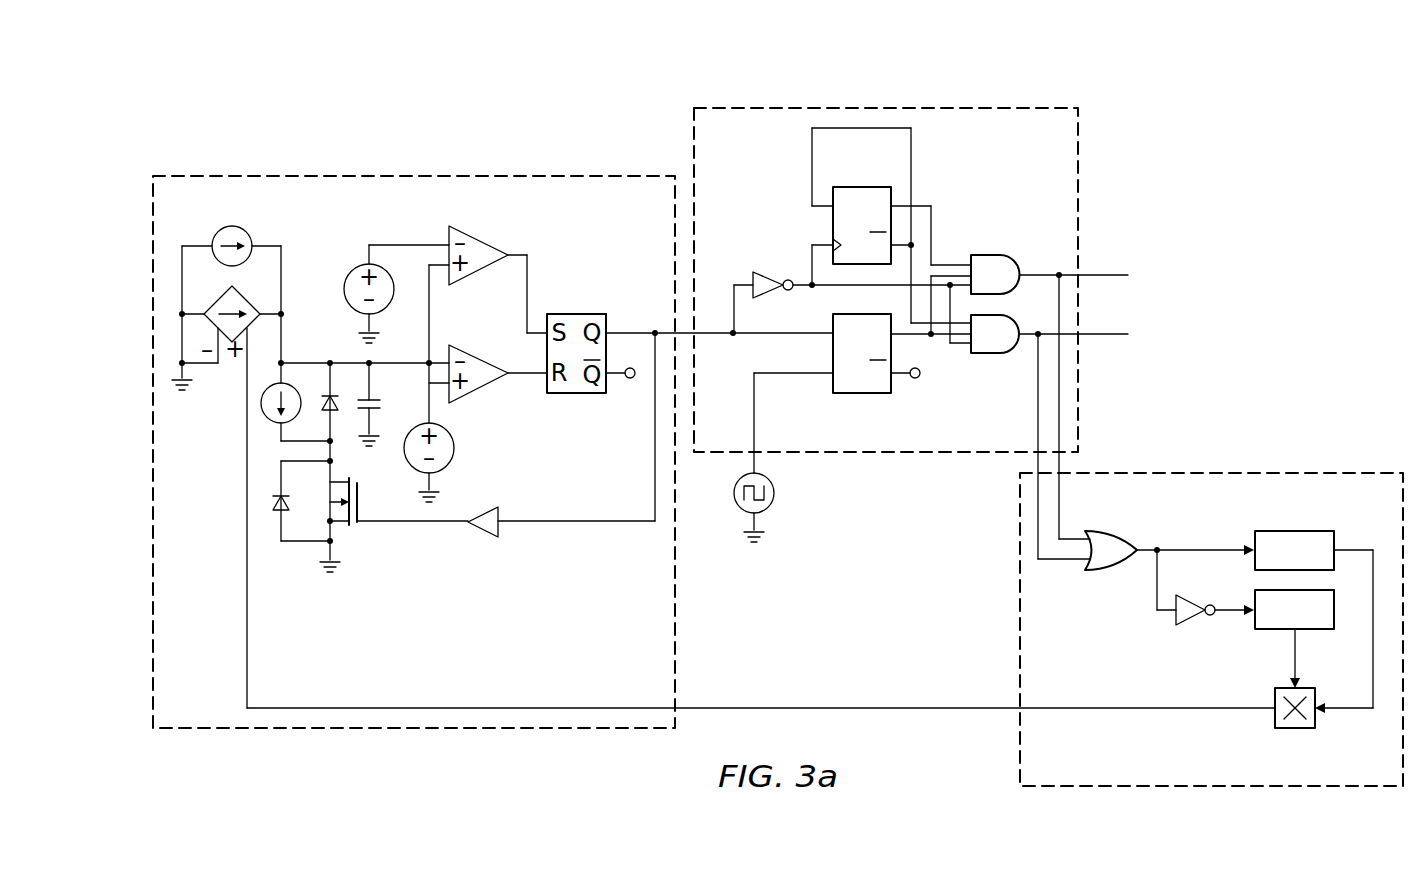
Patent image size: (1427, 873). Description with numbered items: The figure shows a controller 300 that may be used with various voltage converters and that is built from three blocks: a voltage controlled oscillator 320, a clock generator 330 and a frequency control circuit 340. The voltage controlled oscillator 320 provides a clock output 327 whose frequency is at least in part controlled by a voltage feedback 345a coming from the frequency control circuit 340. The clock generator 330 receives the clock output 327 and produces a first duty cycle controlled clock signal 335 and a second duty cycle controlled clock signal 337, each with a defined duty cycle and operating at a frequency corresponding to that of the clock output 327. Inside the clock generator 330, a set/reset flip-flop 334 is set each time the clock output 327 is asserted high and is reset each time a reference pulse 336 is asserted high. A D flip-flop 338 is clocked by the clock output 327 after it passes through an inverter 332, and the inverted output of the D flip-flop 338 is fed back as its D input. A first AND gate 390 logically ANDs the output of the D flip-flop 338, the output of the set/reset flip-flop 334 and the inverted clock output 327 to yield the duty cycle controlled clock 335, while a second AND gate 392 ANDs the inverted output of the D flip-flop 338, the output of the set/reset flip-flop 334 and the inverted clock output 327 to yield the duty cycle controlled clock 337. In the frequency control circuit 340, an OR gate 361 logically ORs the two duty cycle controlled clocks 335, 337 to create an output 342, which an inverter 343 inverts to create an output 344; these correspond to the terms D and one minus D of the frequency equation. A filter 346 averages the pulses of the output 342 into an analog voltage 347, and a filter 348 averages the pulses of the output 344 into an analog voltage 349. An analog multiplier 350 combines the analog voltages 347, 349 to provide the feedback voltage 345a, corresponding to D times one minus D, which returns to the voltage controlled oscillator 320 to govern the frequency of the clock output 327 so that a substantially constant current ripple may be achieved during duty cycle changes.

The controller 300 is at (1244, 82).
The voltage controlled oscillator 320 is at (411, 170).
The clock output 327 is at (714, 336).
The clock generator 330 is at (889, 100).
The inverter 332 is at (770, 273).
The set/reset flip-flop 334 is at (862, 394).
The first duty cycle controlled clock signal 335 is at (1108, 273).
The reference pulse 336 is at (800, 375).
The second duty cycle controlled clock signal 337 is at (1108, 336).
The D flip-flop 338 is at (862, 186).
The frequency control circuit 340 is at (1234, 465).
The output 342 is at (1210, 548).
The inverter 343 is at (1192, 598).
The output 344 is at (1226, 612).
The voltage feedback 345a is at (867, 706).
The filter 346 is at (1300, 530).
The analog voltage 347 is at (1353, 548).
The filter 348 is at (1275, 631).
The analog voltage 349 is at (1297, 650).
The analog multiplier 350 is at (1299, 729).
The OR gate 361 is at (1125, 530).
The first AND gate 390 is at (995, 254).
The second AND gate 392 is at (997, 354).